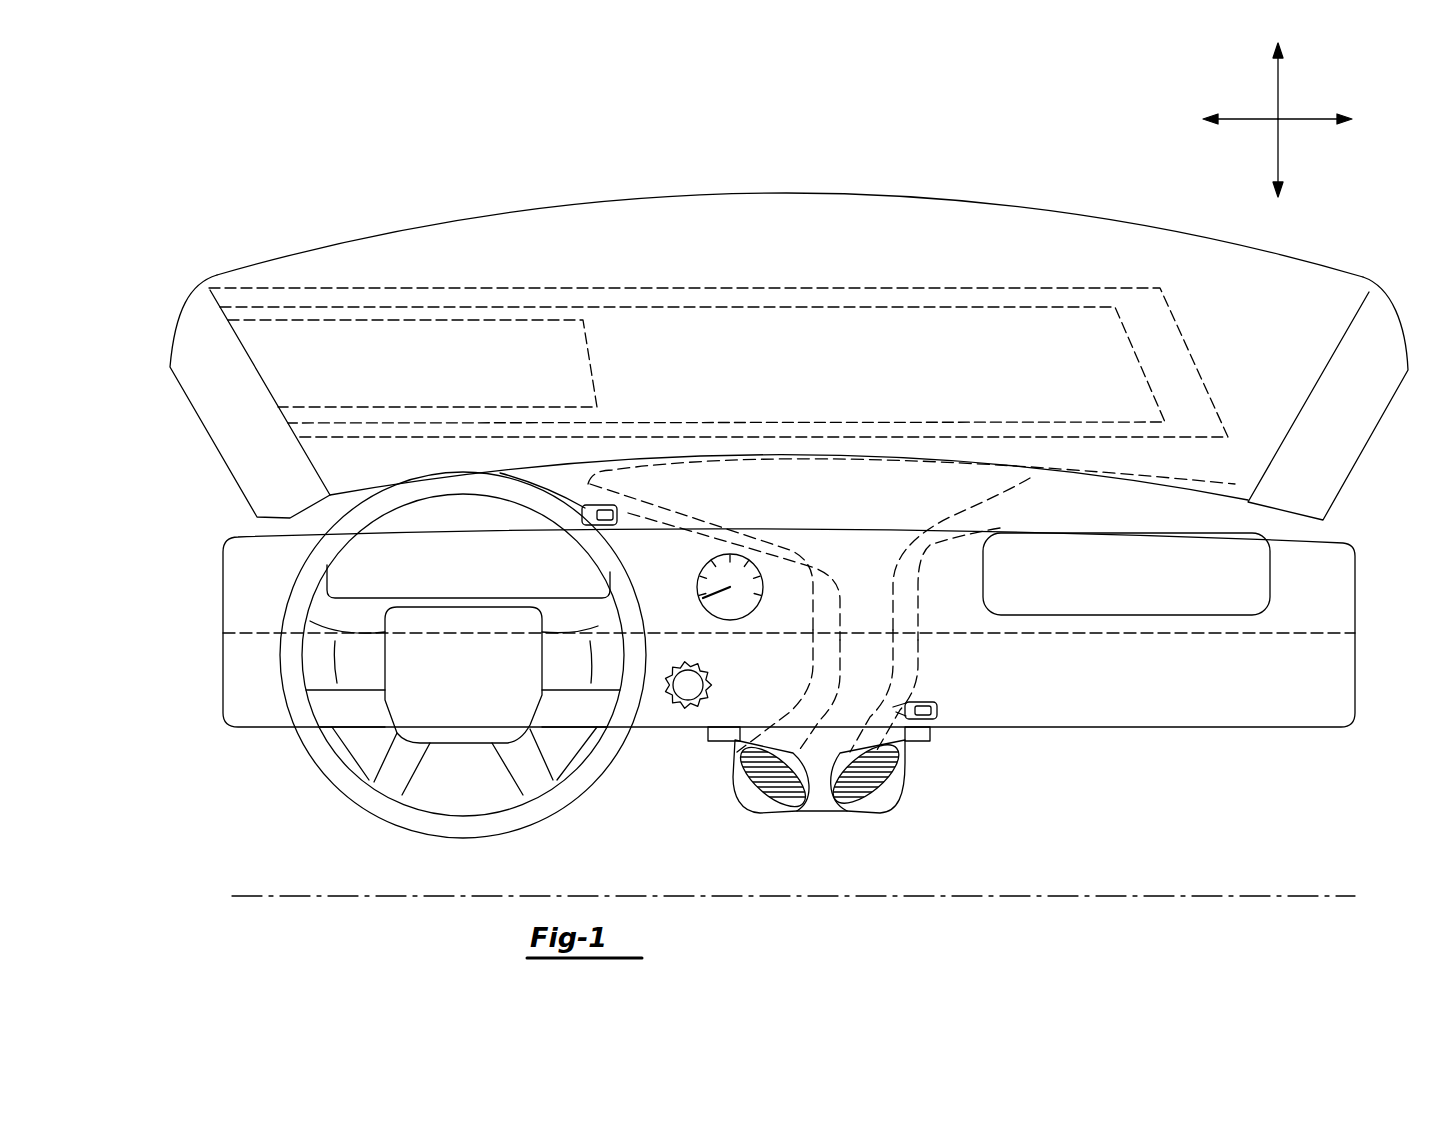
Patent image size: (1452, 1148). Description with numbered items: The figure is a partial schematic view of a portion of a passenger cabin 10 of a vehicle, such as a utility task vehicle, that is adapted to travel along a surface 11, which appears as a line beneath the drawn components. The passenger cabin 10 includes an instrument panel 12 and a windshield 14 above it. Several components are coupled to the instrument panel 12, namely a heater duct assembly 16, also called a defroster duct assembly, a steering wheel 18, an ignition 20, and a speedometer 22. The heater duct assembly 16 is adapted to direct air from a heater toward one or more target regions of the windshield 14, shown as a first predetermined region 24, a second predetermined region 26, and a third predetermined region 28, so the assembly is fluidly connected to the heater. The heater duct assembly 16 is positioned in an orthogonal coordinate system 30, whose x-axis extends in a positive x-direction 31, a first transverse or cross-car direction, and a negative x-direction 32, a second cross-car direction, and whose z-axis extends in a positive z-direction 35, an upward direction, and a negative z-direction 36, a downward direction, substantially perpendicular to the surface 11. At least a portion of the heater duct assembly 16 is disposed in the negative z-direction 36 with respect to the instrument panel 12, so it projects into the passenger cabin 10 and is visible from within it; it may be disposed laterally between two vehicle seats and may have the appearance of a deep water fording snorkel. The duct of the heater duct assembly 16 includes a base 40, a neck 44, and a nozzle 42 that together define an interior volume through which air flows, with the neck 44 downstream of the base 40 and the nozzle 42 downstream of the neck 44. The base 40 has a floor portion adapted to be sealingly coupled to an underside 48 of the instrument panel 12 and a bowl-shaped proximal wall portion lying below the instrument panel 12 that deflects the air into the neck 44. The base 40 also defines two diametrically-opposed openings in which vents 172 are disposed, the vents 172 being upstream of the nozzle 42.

The passenger cabin 10 is at (326, 238).
The surface 11 is at (1085, 895).
The instrument panel 12 is at (1255, 707).
The windshield 14 is at (1247, 468).
The heater duct assembly 16 is at (886, 664).
The steering wheel 18 is at (297, 667).
The ignition 20 is at (690, 703).
The speedometer 22 is at (722, 578).
The first predetermined region 24 is at (1187, 347).
The second predetermined region 26 is at (1153, 397).
The third predetermined region 28 is at (603, 388).
The orthogonal coordinate system 30 is at (1222, 120).
The positive x-direction 31 is at (1300, 124).
The negative x-direction 32 is at (1251, 118).
The positive z-direction 35 is at (1279, 100).
The negative z-direction 36 is at (1276, 146).
The base 40 is at (841, 800).
The nozzle 42 is at (1008, 491).
The neck 44 is at (903, 677).
The underside 48 is at (1048, 726).
The vents 172 is at (777, 800).